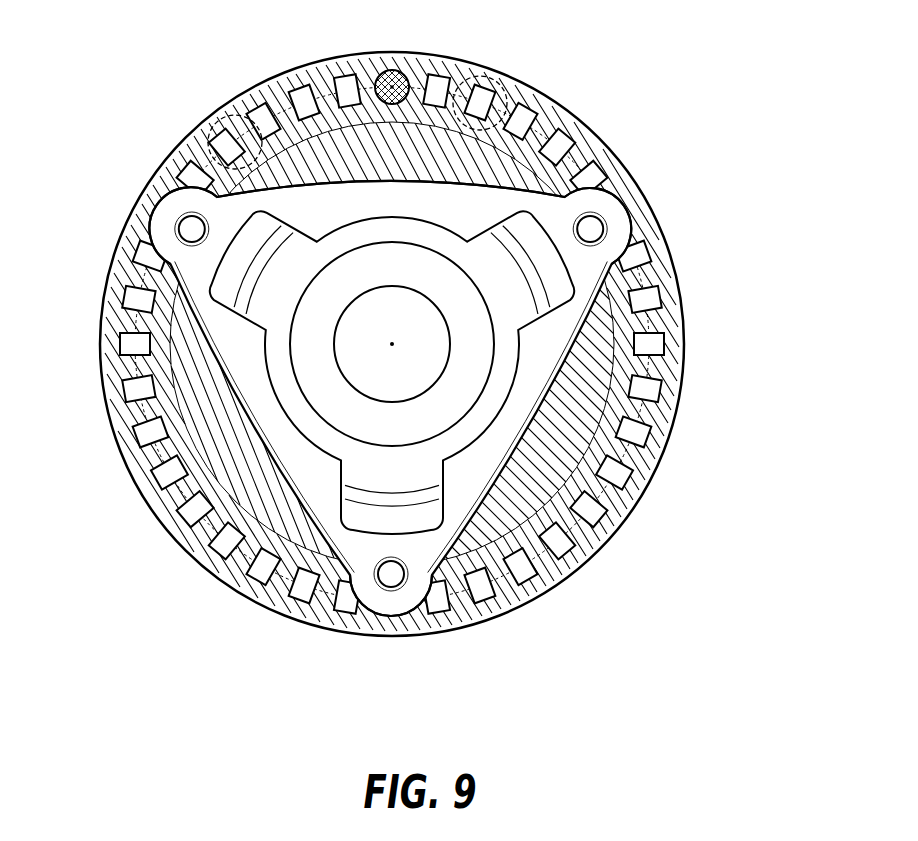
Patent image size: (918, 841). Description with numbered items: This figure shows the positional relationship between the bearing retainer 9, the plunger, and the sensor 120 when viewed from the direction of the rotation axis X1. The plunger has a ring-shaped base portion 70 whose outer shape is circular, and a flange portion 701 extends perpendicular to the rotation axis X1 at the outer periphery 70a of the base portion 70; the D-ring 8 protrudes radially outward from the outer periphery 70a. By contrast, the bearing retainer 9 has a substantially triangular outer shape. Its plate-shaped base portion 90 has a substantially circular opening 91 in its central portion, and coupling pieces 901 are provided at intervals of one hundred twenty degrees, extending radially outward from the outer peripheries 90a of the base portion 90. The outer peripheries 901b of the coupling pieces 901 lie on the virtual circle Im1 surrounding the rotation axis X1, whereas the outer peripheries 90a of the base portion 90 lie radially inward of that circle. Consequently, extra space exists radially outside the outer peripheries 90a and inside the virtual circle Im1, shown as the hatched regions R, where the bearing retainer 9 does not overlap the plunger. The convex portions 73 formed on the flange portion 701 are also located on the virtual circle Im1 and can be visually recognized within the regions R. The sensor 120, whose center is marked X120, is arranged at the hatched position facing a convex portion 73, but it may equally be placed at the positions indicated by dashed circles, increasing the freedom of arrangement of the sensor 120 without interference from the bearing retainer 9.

The D-ring 8 is at (588, 116).
The bearing retainer 9 is at (632, 230).
The base portion 70 is at (666, 442).
The outer periphery 70a is at (660, 280).
The flange portion 701 is at (660, 475).
The convex portions 73 is at (250, 110).
The base portion 90 is at (515, 440).
The outer peripheries 90a is at (333, 168).
The opening 91 is at (466, 430).
The coupling pieces 901 is at (156, 225).
The outer peripheries 901b is at (165, 191).
The sensor 120 is at (380, 72).
The pin center axis X120 is at (400, 80).
The rotation axis X1 is at (396, 346).
The virtual circle Im1 is at (660, 322).
The regions R is at (205, 140).